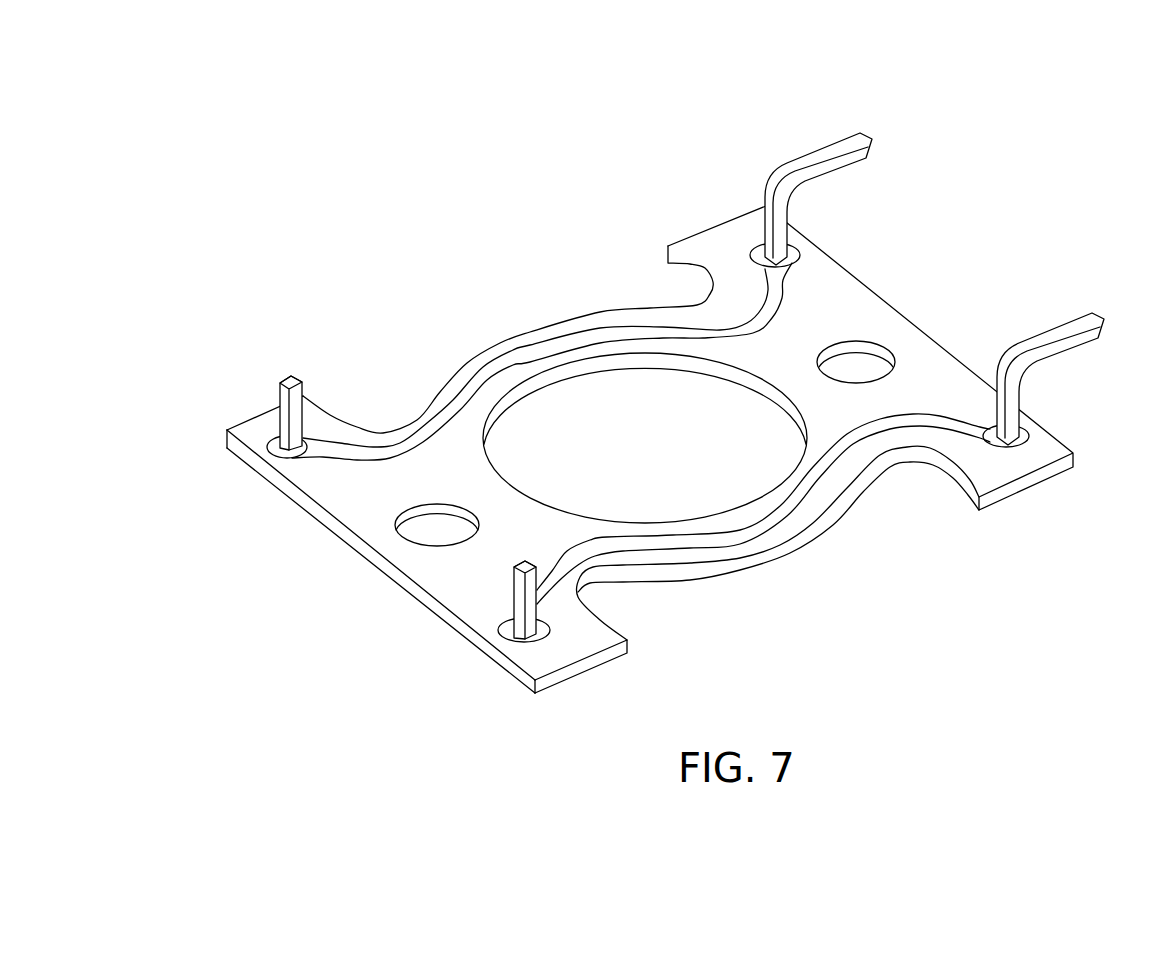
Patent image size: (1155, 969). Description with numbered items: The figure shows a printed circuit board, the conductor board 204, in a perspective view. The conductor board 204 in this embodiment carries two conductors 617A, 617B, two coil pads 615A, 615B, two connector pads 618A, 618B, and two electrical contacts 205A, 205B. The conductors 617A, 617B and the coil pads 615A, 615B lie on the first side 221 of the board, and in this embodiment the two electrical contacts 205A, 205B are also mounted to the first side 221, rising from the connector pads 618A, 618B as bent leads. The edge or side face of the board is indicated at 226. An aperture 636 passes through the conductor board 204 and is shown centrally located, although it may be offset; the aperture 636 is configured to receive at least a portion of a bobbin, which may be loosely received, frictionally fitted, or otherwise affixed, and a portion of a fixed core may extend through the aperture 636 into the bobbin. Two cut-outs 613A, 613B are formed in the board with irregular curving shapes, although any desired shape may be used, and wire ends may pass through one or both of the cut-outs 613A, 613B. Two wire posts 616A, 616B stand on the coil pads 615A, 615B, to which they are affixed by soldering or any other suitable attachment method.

The conductor board 204 is at (340, 690).
The electrical contact 205A is at (856, 128).
The electrical contact 205B is at (1096, 311).
The first side 221 is at (340, 492).
The side edge of plate 226 is at (345, 546).
The cut-out 613A is at (664, 249).
The cut-out 613B is at (990, 517).
The coil pad 615A is at (258, 449).
The coil pad 615B is at (547, 641).
The wire post 616A is at (281, 389).
The wire post 616B is at (513, 588).
The conductor 617A is at (775, 309).
The conductor 617B is at (938, 415).
The connector pad 618A is at (800, 258).
The connector pad 618B is at (1053, 442).
The aperture 636 is at (702, 475).